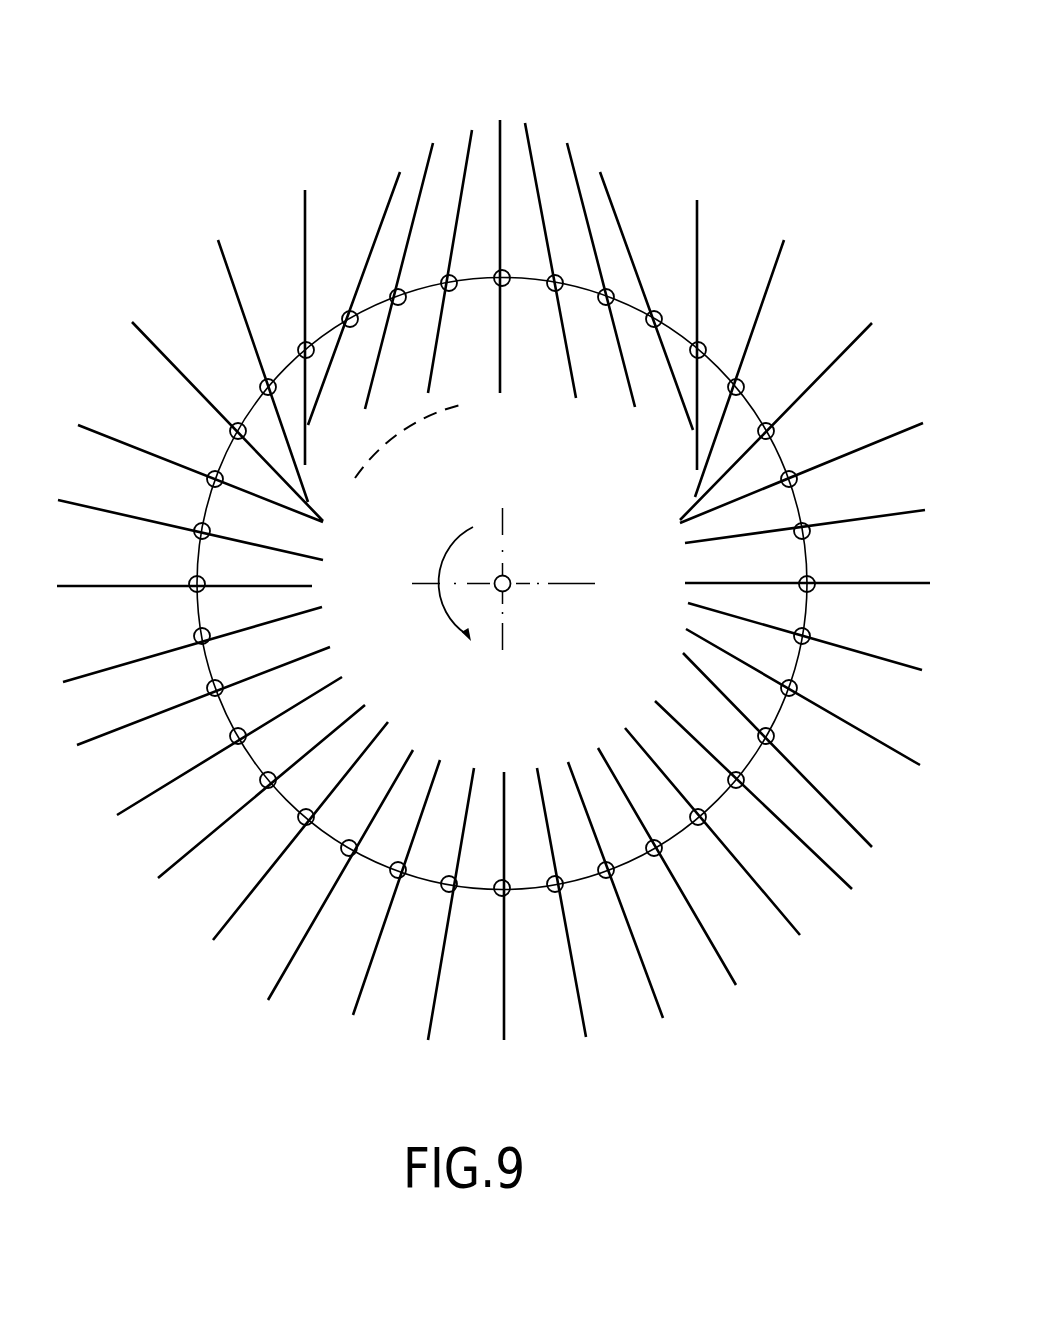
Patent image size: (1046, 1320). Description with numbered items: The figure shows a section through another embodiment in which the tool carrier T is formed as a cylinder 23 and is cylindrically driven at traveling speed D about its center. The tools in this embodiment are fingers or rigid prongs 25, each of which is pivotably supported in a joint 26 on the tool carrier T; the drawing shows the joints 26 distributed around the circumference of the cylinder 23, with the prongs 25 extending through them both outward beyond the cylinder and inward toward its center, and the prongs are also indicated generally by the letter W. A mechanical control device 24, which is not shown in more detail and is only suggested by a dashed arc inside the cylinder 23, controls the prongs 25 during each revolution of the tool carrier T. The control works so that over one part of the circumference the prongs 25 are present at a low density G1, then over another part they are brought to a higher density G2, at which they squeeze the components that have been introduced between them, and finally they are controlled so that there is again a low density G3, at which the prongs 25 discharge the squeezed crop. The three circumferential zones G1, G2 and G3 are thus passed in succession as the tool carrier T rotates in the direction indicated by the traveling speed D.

The tool carrier T is at (797, 502).
The cylinder 23 is at (518, 620).
The mechanical control device 24 is at (412, 427).
The prongs 25 is at (435, 987).
The joints 26 is at (453, 892).
The wires W is at (493, 555).
The traveling speed D is at (449, 584).
The low density G1 is at (764, 612).
The higher density G2 is at (483, 205).
The low density G3 is at (235, 620).